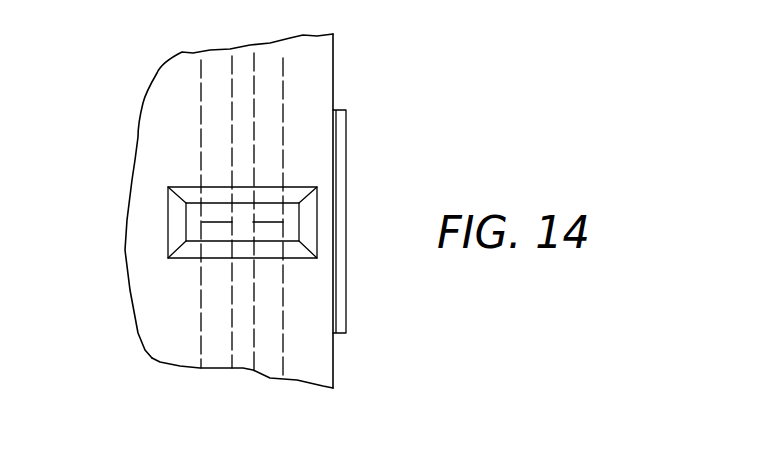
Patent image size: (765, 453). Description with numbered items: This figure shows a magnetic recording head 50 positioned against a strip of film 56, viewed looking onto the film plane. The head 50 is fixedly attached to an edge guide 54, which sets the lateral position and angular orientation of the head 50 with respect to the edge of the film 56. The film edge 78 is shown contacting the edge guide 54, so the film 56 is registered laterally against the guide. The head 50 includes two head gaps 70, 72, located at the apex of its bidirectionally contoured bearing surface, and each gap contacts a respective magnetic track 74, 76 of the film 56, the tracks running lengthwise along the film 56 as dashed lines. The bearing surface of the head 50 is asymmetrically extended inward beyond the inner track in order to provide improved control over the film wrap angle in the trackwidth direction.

The magnetic recording head 50 is at (175, 233).
The edge guide 54 is at (340, 323).
The film 56 is at (313, 370).
The head gap 70 is at (215, 222).
The head gap 72 is at (269, 222).
The magnetic track 74 is at (212, 358).
The magnetic track 76 is at (270, 367).
The film edge 78 is at (333, 55).